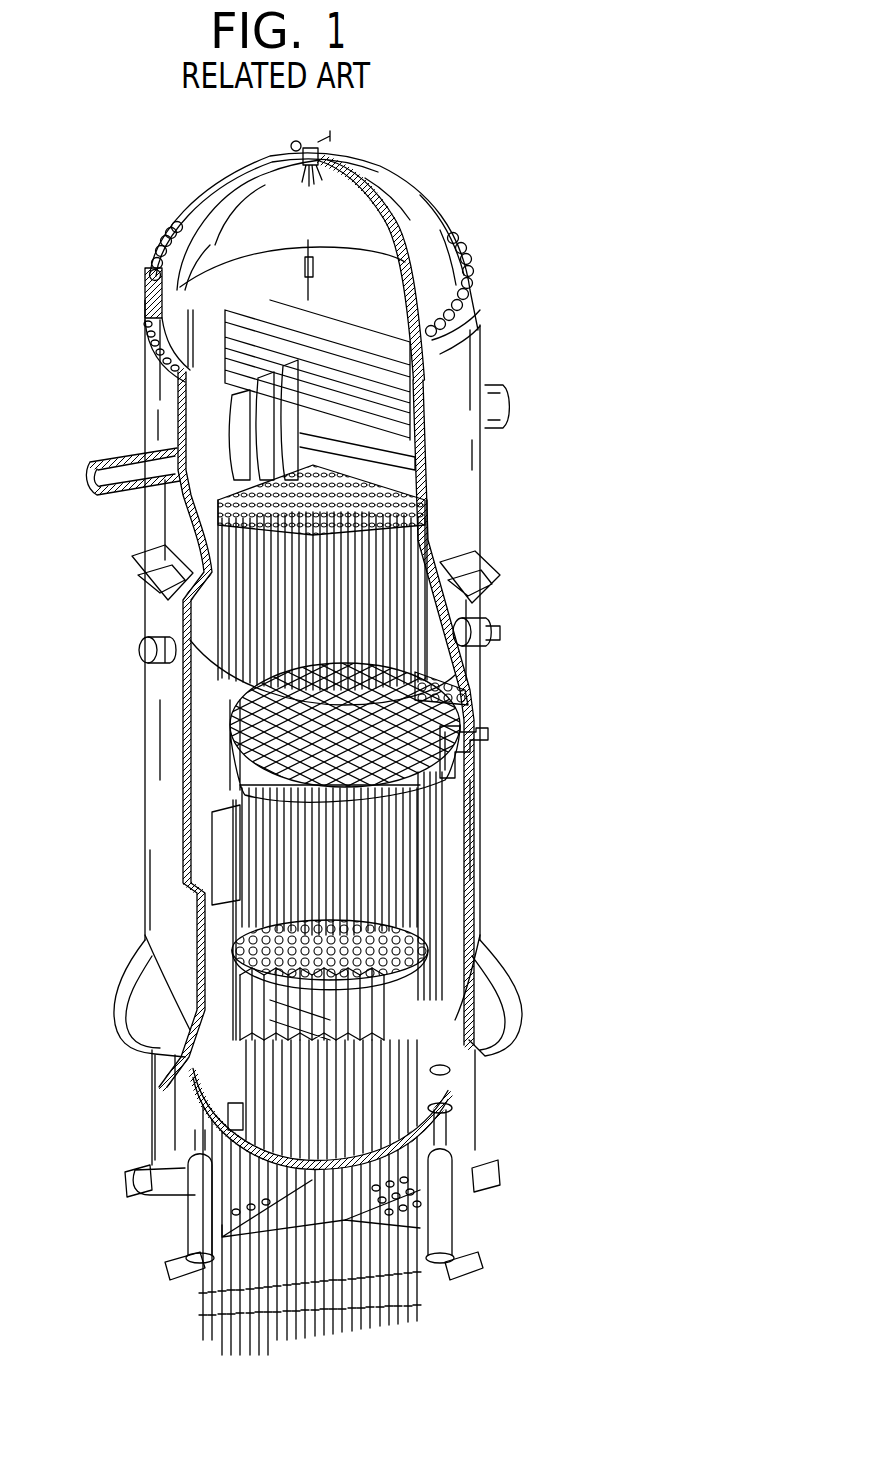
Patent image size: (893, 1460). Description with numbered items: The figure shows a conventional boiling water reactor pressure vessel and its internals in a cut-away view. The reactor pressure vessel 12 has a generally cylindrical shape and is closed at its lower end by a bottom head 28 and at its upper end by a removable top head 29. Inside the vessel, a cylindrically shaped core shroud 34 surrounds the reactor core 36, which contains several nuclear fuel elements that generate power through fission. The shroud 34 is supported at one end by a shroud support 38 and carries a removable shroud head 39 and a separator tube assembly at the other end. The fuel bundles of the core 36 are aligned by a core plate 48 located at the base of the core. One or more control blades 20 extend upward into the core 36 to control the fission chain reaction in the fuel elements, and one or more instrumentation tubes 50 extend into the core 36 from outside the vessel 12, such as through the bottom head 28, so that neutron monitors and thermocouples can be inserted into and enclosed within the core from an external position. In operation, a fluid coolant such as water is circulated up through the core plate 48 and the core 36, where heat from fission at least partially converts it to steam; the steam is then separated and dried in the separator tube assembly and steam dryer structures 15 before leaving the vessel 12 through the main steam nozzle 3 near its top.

The main steam nozzle 3 is at (88, 486).
The reactor pressure vessel 12 is at (393, 807).
The steam dryer structures 15 is at (413, 548).
The control blades 20 is at (260, 1107).
The bottom head 28 is at (437, 1123).
The top head 29 is at (422, 230).
The core shroud 34 is at (483, 867).
The reactor core 36 is at (488, 748).
The shroud support 38 is at (200, 1150).
The shroud head 39 is at (213, 753).
The core plate 48 is at (423, 960).
The instrumentation tubes 50 is at (433, 832).